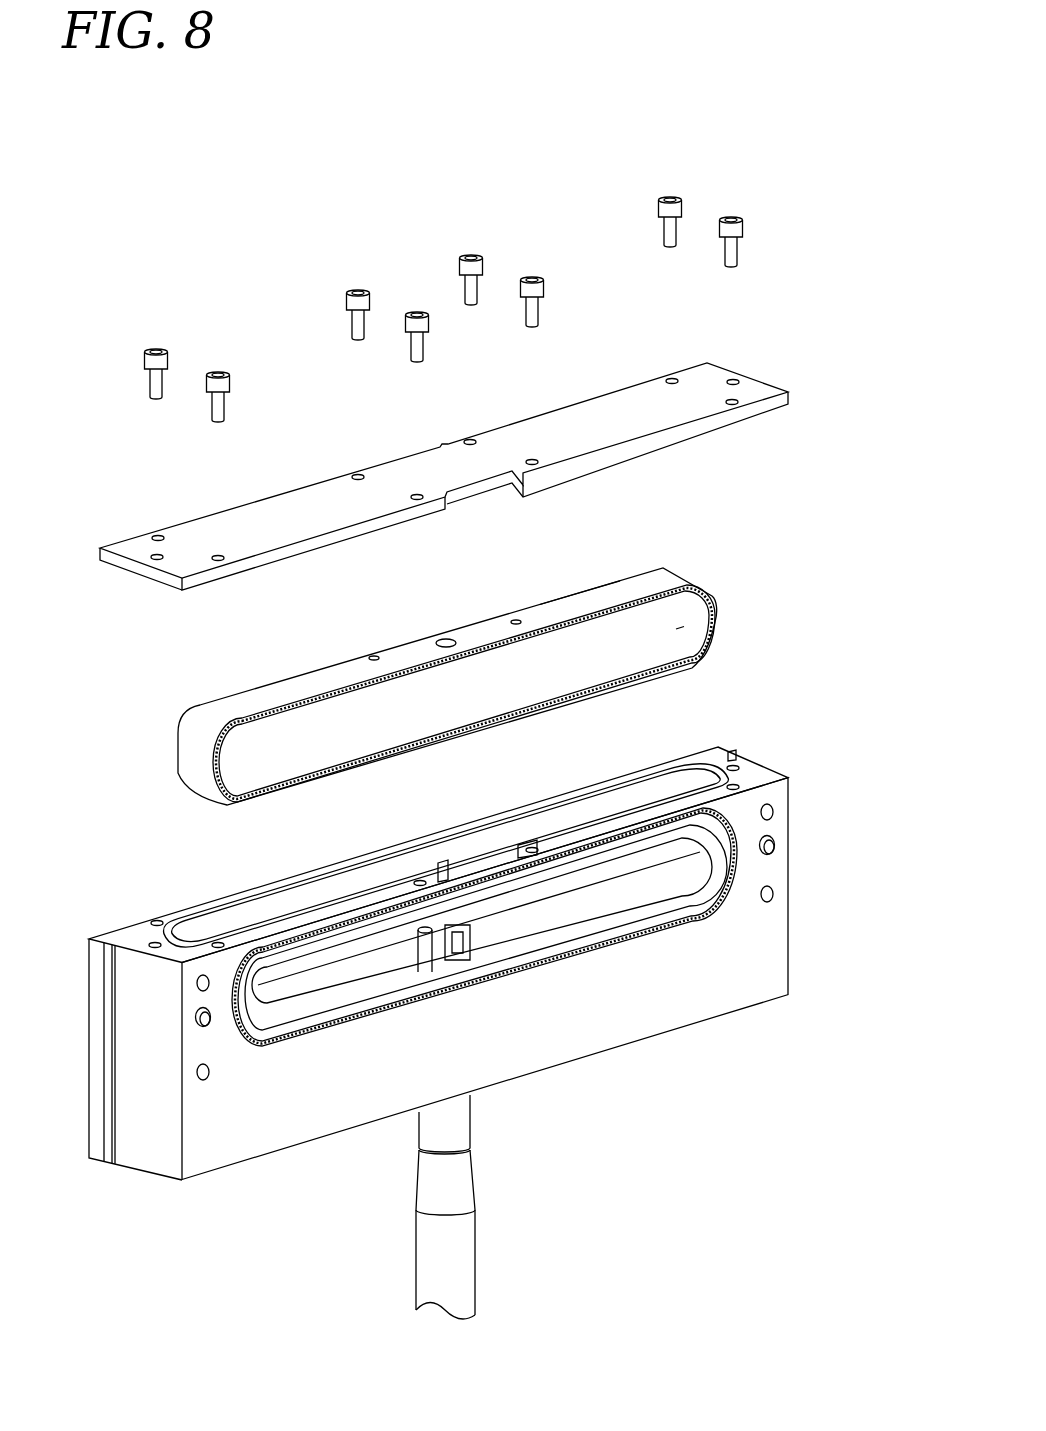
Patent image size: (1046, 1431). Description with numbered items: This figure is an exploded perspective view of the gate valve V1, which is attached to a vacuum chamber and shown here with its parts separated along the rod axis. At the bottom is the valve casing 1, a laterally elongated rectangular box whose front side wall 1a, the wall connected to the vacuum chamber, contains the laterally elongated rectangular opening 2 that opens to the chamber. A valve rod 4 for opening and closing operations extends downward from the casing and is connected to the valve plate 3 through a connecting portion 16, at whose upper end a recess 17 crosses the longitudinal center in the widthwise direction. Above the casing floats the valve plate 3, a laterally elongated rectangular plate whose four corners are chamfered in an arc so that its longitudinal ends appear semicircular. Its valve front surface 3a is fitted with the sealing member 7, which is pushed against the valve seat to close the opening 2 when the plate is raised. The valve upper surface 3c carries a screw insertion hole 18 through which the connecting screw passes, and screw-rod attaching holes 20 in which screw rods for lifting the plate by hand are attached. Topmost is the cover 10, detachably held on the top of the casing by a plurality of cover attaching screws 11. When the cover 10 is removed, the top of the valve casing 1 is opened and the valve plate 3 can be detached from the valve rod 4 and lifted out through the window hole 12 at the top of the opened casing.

The gate valve V1 is at (273, 214).
The valve casing 1 is at (765, 768).
The front side wall 1a is at (752, 963).
The opening 2 is at (690, 860).
The valve plate 3 is at (650, 575).
The valve front surface 3a is at (680, 628).
The valve upper surface 3c is at (582, 592).
The valve rod 4 is at (453, 1253).
The sealing member 7 is at (287, 700).
The cover 10 is at (310, 505).
The cover attaching screws 11 is at (531, 278).
The window hole 12 is at (242, 920).
The connecting portion 16 is at (430, 953).
The recess 17 is at (455, 930).
The screw insertion hole 18 is at (446, 639).
The screw-rod attaching holes 20 is at (374, 656).